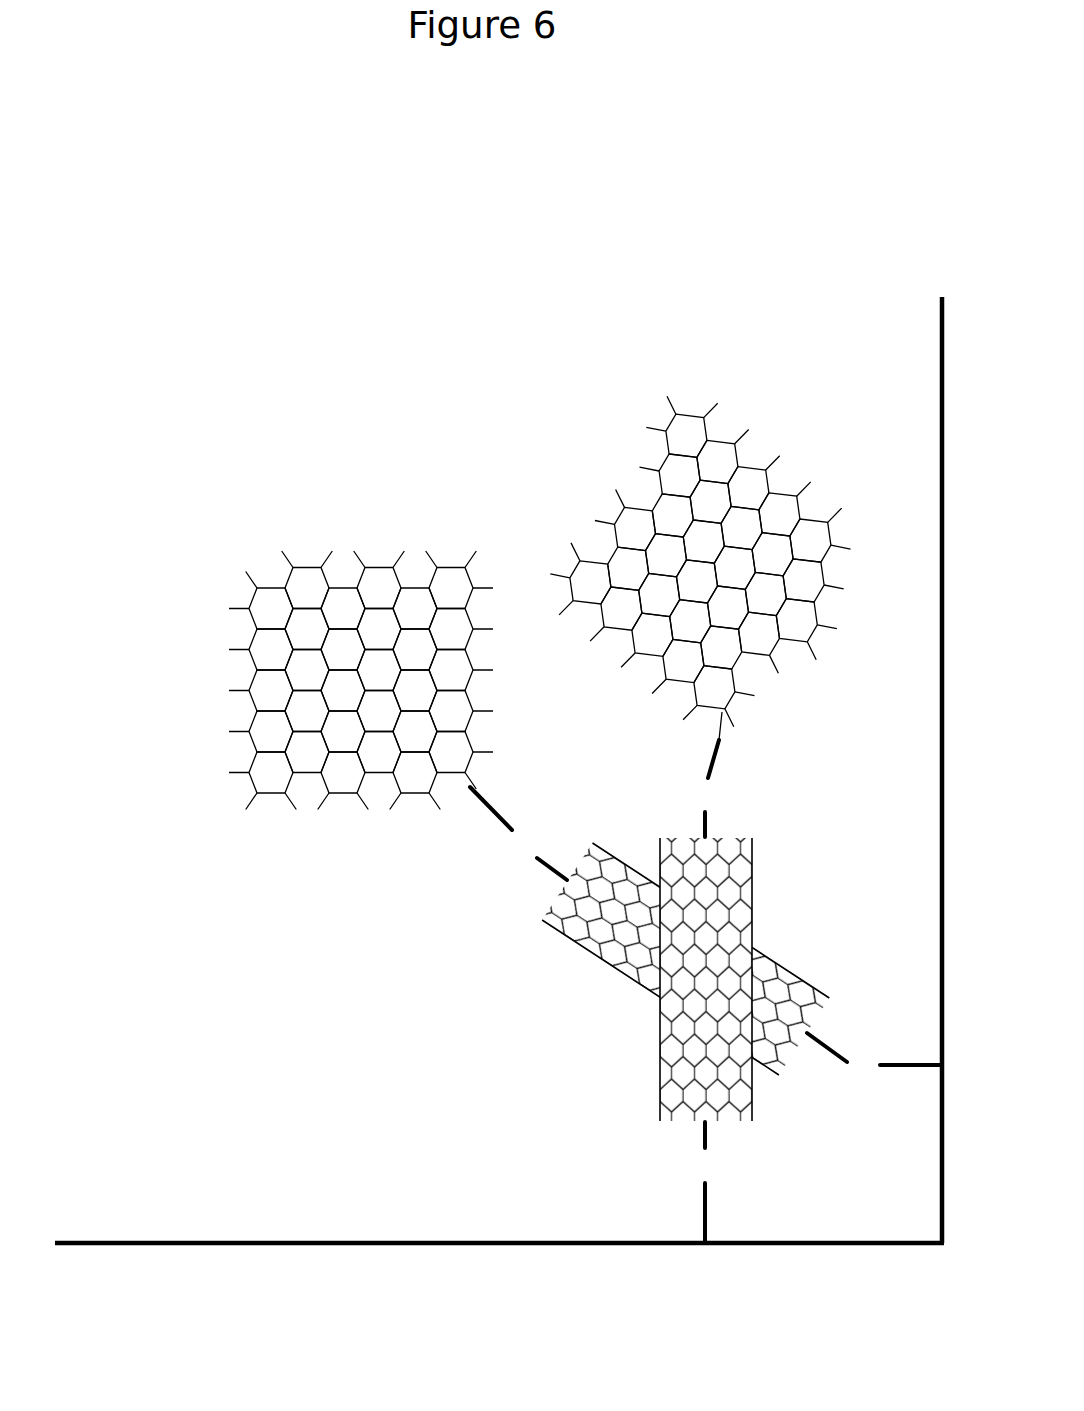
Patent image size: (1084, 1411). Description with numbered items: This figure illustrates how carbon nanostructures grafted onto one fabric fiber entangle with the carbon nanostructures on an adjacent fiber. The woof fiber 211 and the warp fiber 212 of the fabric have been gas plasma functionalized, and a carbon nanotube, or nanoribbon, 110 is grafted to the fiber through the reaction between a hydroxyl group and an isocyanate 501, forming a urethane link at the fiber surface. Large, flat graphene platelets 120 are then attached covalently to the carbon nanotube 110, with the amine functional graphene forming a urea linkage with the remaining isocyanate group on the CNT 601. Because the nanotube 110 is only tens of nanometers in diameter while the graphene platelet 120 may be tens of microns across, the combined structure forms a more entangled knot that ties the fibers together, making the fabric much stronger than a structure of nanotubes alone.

The warp fiber 212 is at (935, 377).
The woof fiber 211 is at (458, 1252).
The graphene platelet 120 is at (640, 488).
The carbon nanotube 110 is at (576, 967).
The urea linkage to remaining isocyanate group on the CNT 601 is at (493, 858).
The reaction between hydroxyl and isocyanate 501 is at (722, 1167).